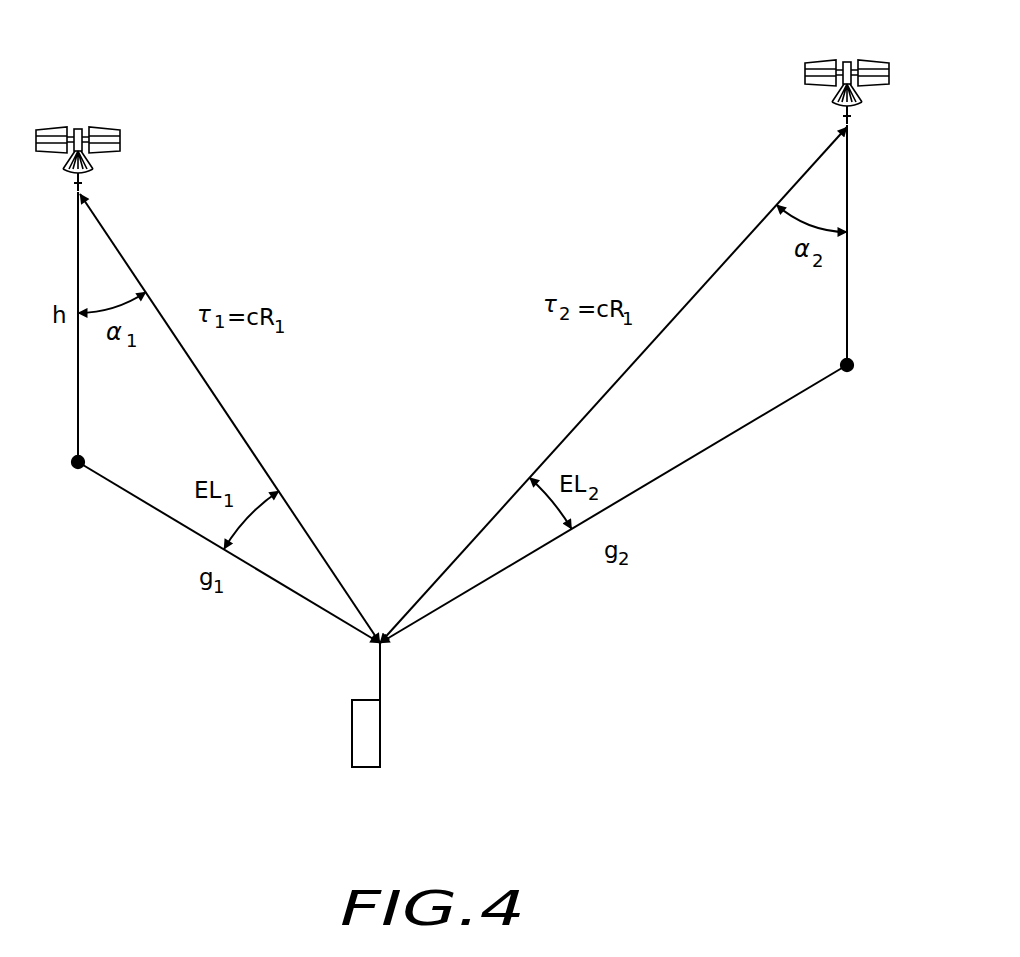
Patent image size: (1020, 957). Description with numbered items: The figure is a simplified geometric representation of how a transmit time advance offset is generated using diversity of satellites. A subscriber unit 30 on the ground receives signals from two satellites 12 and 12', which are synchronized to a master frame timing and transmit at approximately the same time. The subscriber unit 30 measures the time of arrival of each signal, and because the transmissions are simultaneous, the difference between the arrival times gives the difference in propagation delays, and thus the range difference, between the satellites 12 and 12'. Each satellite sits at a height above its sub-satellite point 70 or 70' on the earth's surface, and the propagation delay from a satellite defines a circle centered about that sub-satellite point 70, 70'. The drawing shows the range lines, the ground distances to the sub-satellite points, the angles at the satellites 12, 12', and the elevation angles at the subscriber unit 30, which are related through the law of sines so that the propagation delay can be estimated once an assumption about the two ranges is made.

The satellite 12 is at (105, 142).
The satellite 12' is at (847, 63).
The sub-satellite point 70 is at (59, 491).
The sub-satellite point 70' is at (868, 395).
The subscriber unit 30 is at (381, 713).